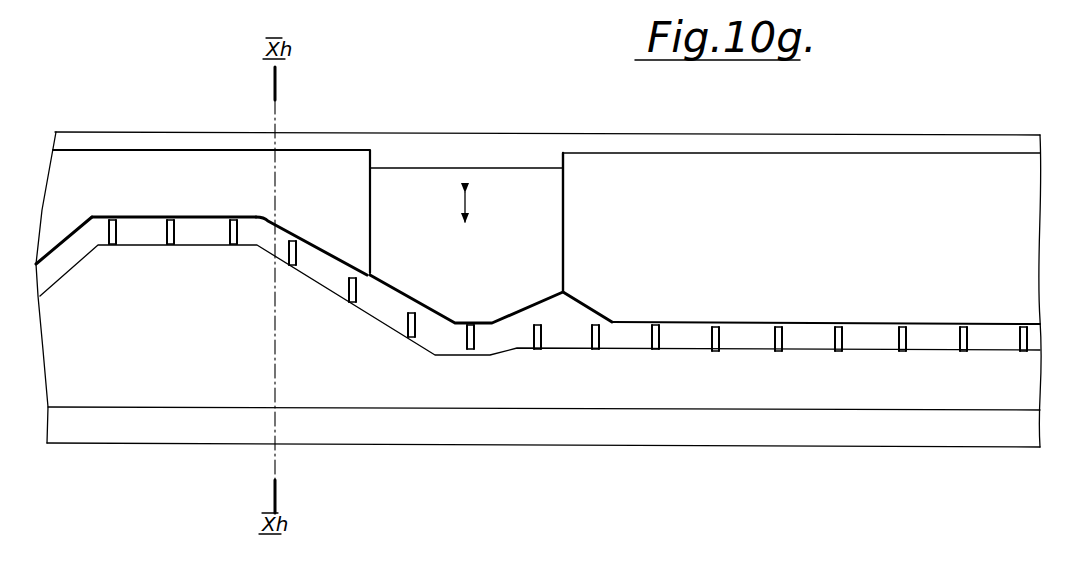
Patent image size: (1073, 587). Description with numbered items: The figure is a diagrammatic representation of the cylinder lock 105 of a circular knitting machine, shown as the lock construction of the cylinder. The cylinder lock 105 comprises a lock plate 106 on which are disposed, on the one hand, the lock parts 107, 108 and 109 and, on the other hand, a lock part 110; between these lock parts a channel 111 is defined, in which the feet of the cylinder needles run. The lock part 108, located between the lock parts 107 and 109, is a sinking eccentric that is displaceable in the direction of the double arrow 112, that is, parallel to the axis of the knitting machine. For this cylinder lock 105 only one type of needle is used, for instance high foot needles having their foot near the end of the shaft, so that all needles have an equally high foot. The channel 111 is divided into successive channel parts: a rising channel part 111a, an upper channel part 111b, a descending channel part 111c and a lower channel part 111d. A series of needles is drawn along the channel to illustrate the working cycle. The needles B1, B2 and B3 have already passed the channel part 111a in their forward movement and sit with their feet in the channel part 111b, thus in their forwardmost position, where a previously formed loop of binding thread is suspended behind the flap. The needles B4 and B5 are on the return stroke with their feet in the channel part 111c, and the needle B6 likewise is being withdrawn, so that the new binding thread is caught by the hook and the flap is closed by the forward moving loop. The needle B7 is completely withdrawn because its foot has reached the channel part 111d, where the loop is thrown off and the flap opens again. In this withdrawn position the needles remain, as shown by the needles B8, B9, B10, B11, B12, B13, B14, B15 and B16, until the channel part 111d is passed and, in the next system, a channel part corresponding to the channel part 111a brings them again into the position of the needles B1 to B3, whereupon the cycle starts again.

The cylinder lock 105 is at (727, 450).
The lock plate 106 is at (790, 427).
The lock part 107 is at (170, 160).
The lock part 108 is at (510, 187).
The lock part 109 is at (893, 175).
The lock part 110 is at (533, 398).
The channel 111 is at (156, 238).
The channel part 111a is at (57, 272).
The channel part 111b is at (203, 242).
The channel part 111c is at (328, 280).
The channel part 111d is at (802, 343).
The double arrow 112 is at (462, 208).
The needle B1 is at (108, 228).
The needle B2 is at (178, 227).
The needle B3 is at (240, 227).
The needle B4 is at (298, 252).
The needle B5 is at (360, 288).
The needle B6 is at (417, 317).
The needle B7 is at (476, 330).
The needle B8 is at (543, 332).
The needle B9 is at (600, 332).
The needle B10 is at (660, 333).
The needle B11 is at (720, 333).
The needle B12 is at (785, 333).
The needle B13 is at (843, 333).
The needle B14 is at (905, 333).
The needle B15 is at (970, 333).
The needle B16 is at (1018, 342).